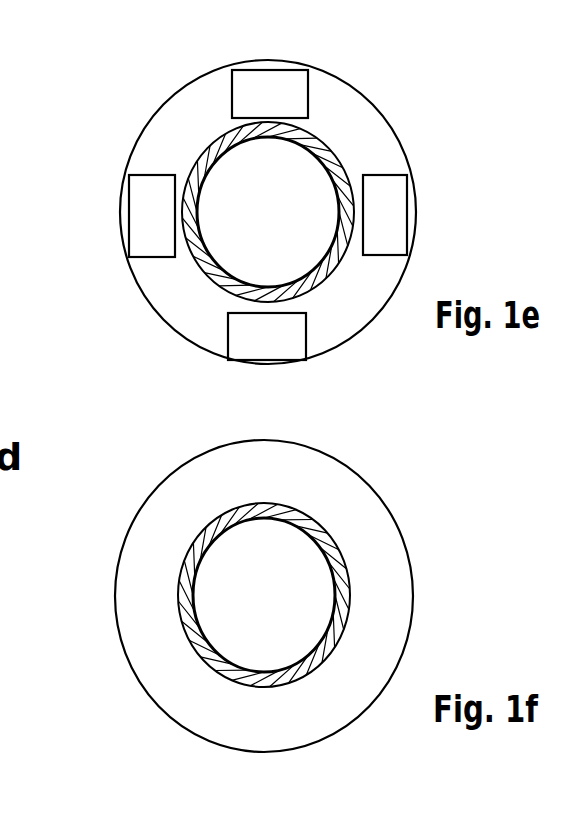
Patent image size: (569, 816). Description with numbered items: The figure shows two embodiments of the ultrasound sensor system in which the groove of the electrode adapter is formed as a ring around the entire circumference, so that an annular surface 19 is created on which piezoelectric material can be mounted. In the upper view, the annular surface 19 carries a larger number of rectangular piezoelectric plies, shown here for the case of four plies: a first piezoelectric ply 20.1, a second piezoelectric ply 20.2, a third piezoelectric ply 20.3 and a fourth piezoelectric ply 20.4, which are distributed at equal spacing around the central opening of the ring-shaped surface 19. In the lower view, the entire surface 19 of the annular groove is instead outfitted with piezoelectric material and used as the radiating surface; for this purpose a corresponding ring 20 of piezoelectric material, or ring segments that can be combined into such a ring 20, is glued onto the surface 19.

In FIG. 1E, the annular surface 19 is at (175, 122).
In FIG. 1E, the ring 20 is at (268, 212).
In FIG. 1F, the ring 20 is at (172, 510).
In FIG. 1E, the piezoelectric ply 20.1 is at (300, 93).
In FIG. 1E, the piezoelectric ply 20.2 is at (397, 197).
In FIG. 1E, the piezoelectric ply 20.3 is at (290, 337).
In FIG. 1E, the piezoelectric ply 20.4 is at (140, 200).